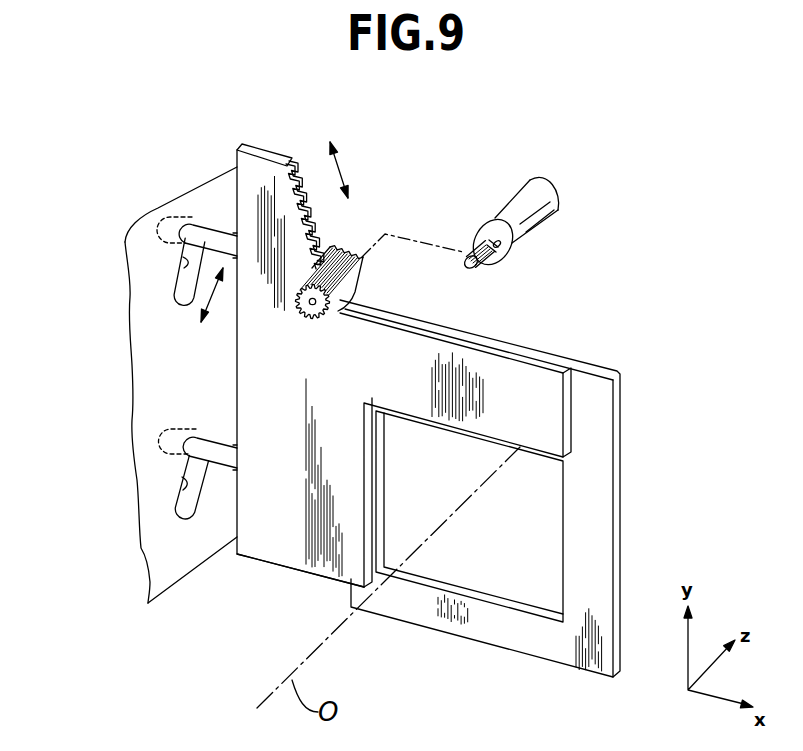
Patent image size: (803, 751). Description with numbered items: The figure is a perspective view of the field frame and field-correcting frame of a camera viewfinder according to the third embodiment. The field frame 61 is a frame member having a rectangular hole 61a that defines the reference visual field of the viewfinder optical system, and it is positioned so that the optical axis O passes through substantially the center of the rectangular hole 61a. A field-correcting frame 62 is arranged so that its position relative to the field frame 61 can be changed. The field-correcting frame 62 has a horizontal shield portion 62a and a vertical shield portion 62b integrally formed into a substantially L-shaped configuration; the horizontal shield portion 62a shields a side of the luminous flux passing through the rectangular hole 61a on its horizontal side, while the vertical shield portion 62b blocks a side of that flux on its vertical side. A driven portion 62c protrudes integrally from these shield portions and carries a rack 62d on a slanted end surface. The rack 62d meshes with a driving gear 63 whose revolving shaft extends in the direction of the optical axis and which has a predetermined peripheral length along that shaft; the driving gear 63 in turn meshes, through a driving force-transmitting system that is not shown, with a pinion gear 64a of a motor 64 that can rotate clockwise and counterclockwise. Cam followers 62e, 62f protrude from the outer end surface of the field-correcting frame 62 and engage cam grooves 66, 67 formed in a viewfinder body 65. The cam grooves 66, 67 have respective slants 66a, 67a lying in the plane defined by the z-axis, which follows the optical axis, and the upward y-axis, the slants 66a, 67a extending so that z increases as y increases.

The field frame 61 is at (553, 647).
The rectangular hole 61a is at (478, 580).
The field-correcting frame 62 is at (257, 378).
The horizontal shield portion 62a is at (523, 383).
The vertical shield portion 62b is at (290, 553).
The driven portion 62c is at (248, 180).
The rack 62d is at (298, 195).
The cam follower 62e is at (220, 237).
The cam follower 62f is at (223, 463).
The driving gear 63 is at (367, 285).
The motor 64 is at (537, 194).
The pinion gear 64a is at (474, 248).
The viewfinder body 65 is at (148, 414).
The cam groove 66 is at (182, 286).
The slant 66a is at (184, 262).
The cam groove 67 is at (186, 504).
The slant 67a is at (183, 483).